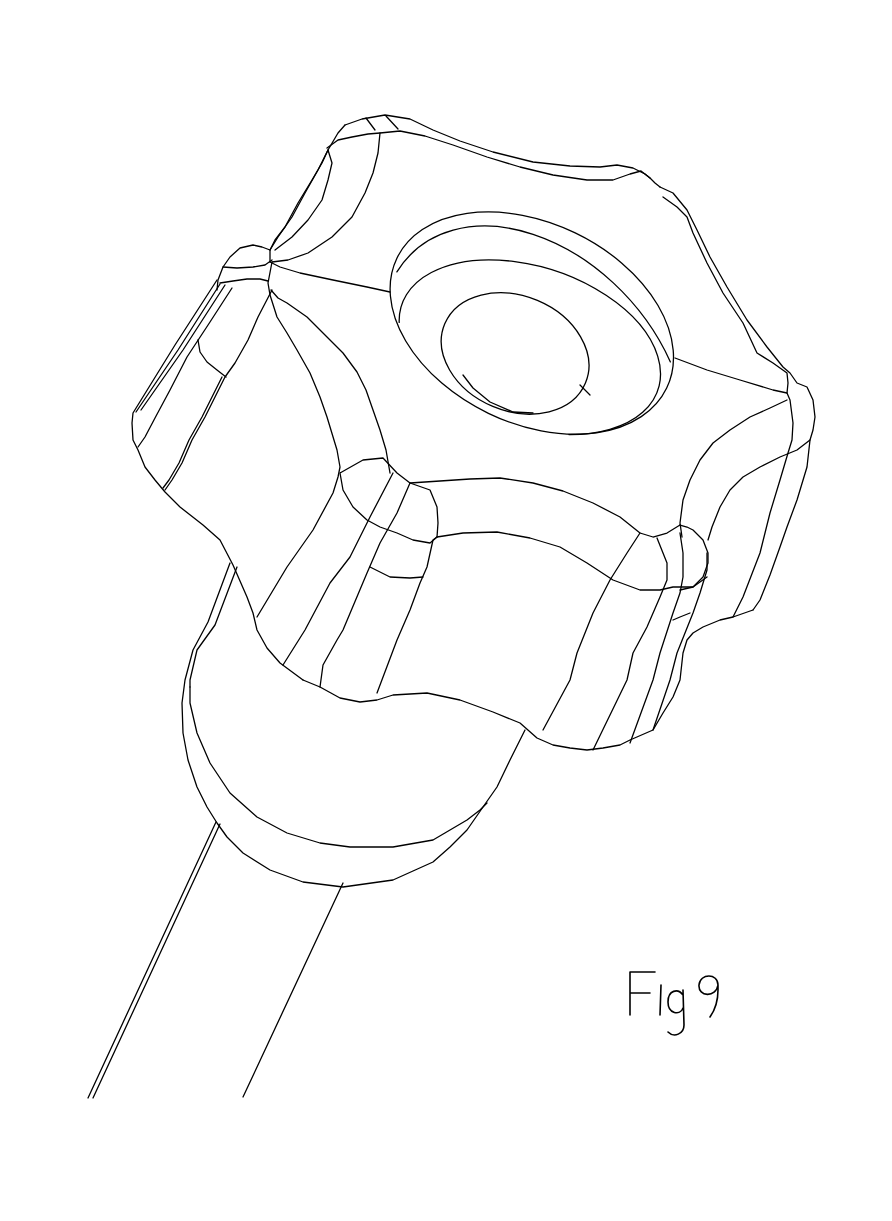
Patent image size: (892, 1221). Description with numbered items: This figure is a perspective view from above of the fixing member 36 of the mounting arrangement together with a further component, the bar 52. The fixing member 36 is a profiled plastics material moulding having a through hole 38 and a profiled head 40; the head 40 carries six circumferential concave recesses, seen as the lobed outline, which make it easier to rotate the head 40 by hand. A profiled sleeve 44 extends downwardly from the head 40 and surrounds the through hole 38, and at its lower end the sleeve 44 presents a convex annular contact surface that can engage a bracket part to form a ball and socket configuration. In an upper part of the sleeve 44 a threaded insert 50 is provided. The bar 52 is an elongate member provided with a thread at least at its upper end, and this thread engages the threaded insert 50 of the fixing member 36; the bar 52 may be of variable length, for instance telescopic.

The fixing member 36 is at (424, 553).
The through hole 38 is at (535, 222).
The profiled head 40 is at (473, 450).
The profiled sleeve 44 is at (375, 745).
The threaded insert 50 is at (585, 323).
The bar 52 is at (253, 960).